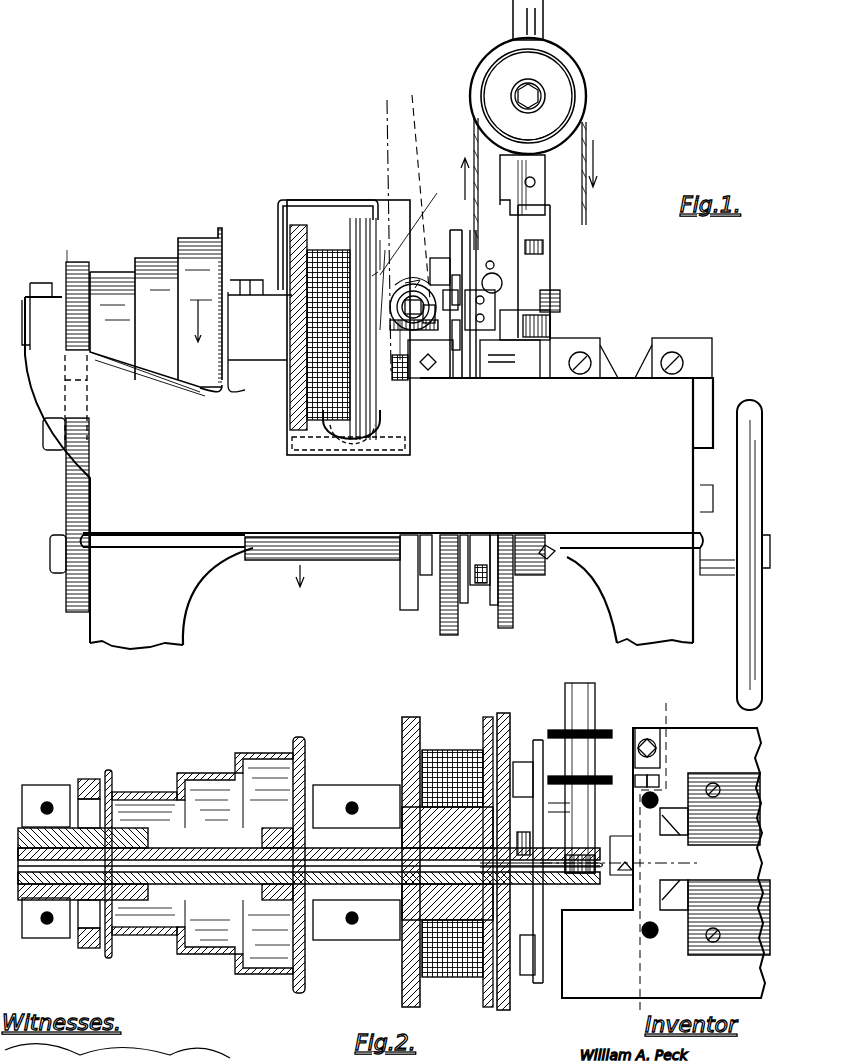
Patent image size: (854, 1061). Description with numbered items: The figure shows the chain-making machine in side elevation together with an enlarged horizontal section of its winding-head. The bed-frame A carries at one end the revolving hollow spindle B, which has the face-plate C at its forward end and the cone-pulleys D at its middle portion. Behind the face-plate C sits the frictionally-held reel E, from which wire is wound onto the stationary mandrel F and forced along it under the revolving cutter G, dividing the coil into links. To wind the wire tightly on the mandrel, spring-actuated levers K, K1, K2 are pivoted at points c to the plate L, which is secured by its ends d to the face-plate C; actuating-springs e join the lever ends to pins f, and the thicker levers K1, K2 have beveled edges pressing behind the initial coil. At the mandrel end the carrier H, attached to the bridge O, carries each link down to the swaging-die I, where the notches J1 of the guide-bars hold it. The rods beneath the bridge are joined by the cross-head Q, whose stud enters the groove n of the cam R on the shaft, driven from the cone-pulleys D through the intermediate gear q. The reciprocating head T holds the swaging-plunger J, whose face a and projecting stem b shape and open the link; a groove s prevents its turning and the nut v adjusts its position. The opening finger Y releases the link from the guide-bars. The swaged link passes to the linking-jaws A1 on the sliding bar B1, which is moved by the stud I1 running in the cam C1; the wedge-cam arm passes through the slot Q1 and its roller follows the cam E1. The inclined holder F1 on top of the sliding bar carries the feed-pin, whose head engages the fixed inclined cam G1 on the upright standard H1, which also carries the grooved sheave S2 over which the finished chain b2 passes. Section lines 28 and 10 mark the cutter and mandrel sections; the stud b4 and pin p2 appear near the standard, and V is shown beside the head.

In FIG. 1, the bed-frame A is at (369, 473).
In FIG. 2, the bed-frame A is at (666, 863).
In FIG. 2, the revolving hollow spindle B is at (305, 848).
In FIG. 1, the face-plate C is at (360, 215).
In FIG. 2, the face-plate C is at (510, 720).
In FIG. 1, the cone-pulleys D is at (156, 312).
In FIG. 2, the cone-pulleys D is at (191, 865).
In FIG. 1, the frictionally-held reel E is at (348, 327).
In FIG. 2, the frictionally-held reel E is at (398, 722).
In FIG. 1, the stationary mandrel F is at (400, 366).
In FIG. 2, the stationary mandrel F is at (580, 890).
In FIG. 1, the revolving cutter G is at (410, 275).
In FIG. 2, the revolving cutter G is at (595, 895).
In FIG. 1, the carrier H is at (455, 228).
In FIG. 1, the swaging-die I is at (470, 370).
In FIG. 1, the swaging-plunger J is at (508, 360).
In FIG. 1, the spring-actuated lever K is at (396, 285).
In FIG. 2, the spring-actuated lever K is at (595, 720).
In FIG. 1, the plate L is at (411, 230).
In FIG. 2, the plate L is at (470, 880).
In FIG. 1, the cross-head Q is at (440, 262).
In FIG. 1, the cam R is at (438, 630).
In FIG. 1, the reciprocating head T is at (575, 338).
In FIG. 1, the spring V is at (540, 320).
In FIG. 1, the opening finger Y is at (470, 345).
In FIG. 1, the bridge O is at (63, 257).
In FIG. 1, the grooved sheave S2 is at (580, 62).
In FIG. 1, the belt b2 is at (543, 184).
In FIG. 1, the section line 28 is at (433, 444).
In FIG. 2, the section line 28 is at (631, 1011).
In FIG. 2, the section line 10 is at (567, 885).
In FIG. 1, the intermediate gear q is at (75, 470).
In FIG. 1, the groove n is at (66, 600).
In FIG. 1, the groove s is at (332, 568).
In FIG. 1, the ends of plate d is at (379, 251).
In FIG. 2, the ends of plate d is at (530, 758).
In FIG. 2, the actuating-springs e is at (562, 938).
In FIG. 2, the pins f is at (525, 954).
In FIG. 1, the pivot points c is at (380, 370).
In FIG. 1, the projecting stem b is at (486, 360).
In FIG. 1, the face of plunger a is at (495, 355).
In FIG. 1, the nut v is at (555, 340).
In FIG. 1, the spring-actuated lever K2 is at (360, 300).
In FIG. 2, the spring-actuated lever K2 is at (590, 800).
In FIG. 2, the spring-actuated lever K1 is at (546, 915).
In FIG. 1, the upright standard H1 is at (548, 255).
In FIG. 1, the stud I1 is at (548, 268).
In FIG. 1, the fixed inclined cam G1 is at (545, 305).
In FIG. 1, the notches J1 is at (510, 271).
In FIG. 1, the inclined holder F1 is at (492, 321).
In FIG. 1, the linking-jaws A1 is at (430, 359).
In FIG. 1, the cam E1 is at (525, 535).
In FIG. 1, the sliding bar B1 is at (480, 560).
In FIG. 1, the cam C1 is at (512, 625).
In FIG. 1, the slot Q1 is at (464, 600).
In FIG. 1, the pin b4 is at (500, 250).
In FIG. 1, the pin p2 is at (510, 262).